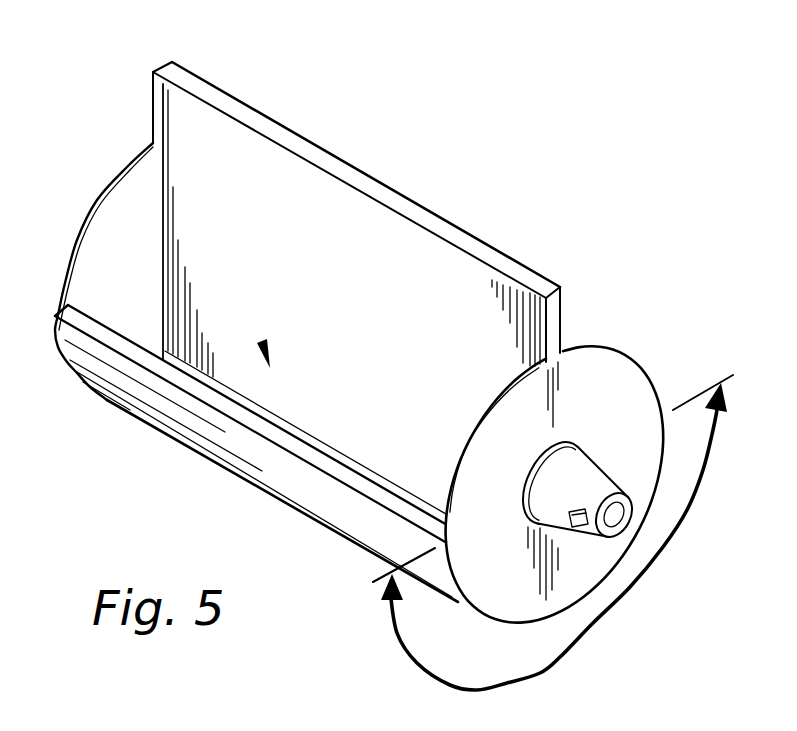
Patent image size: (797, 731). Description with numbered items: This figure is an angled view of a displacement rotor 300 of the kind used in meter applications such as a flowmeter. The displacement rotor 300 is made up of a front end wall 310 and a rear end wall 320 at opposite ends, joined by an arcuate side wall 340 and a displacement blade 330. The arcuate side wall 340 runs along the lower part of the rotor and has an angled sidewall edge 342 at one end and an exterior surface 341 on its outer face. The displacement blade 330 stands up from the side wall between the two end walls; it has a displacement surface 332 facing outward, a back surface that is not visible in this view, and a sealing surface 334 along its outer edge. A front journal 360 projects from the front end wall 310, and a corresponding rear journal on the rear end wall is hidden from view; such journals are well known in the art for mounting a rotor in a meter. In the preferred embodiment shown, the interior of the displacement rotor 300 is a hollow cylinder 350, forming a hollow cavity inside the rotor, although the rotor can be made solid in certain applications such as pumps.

The displacement rotor 300 is at (545, 102).
The front end wall 310 is at (627, 415).
The rear end wall 320 is at (120, 240).
The displacement blade 330 is at (381, 163).
The displacement surface 332 is at (287, 200).
The sealing surface 334 is at (202, 90).
The arcuate side wall 340 is at (226, 490).
The exterior surface 341 is at (323, 497).
The angled sidewall edge 342 is at (85, 325).
The hollow cylinder 350 is at (263, 340).
The front journal 360 is at (573, 463).